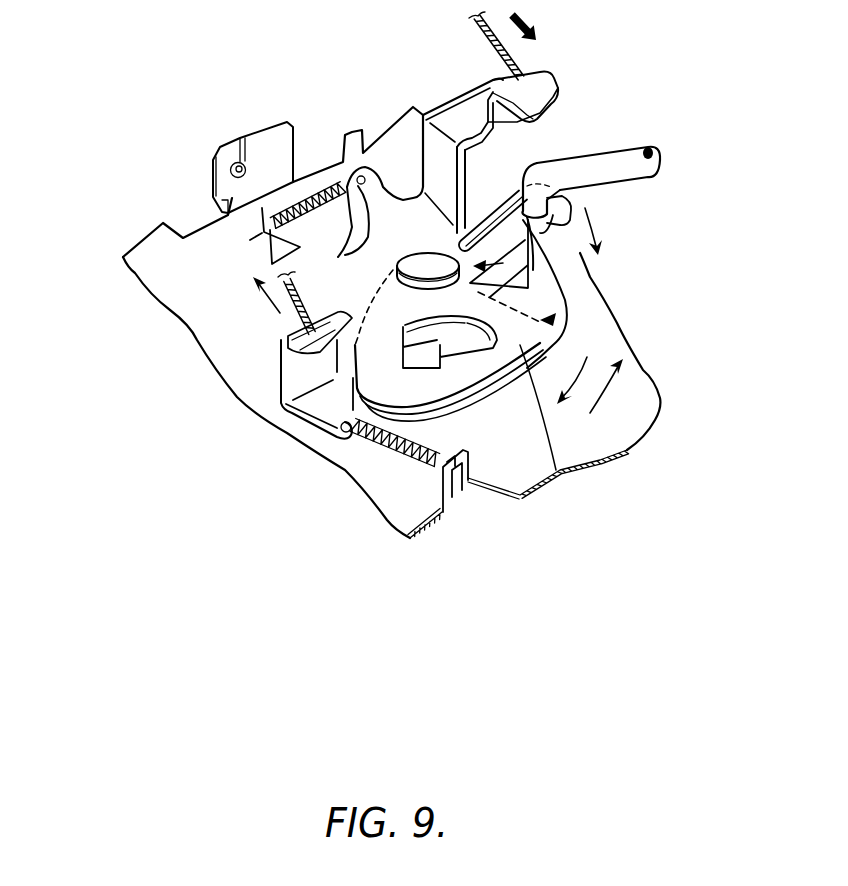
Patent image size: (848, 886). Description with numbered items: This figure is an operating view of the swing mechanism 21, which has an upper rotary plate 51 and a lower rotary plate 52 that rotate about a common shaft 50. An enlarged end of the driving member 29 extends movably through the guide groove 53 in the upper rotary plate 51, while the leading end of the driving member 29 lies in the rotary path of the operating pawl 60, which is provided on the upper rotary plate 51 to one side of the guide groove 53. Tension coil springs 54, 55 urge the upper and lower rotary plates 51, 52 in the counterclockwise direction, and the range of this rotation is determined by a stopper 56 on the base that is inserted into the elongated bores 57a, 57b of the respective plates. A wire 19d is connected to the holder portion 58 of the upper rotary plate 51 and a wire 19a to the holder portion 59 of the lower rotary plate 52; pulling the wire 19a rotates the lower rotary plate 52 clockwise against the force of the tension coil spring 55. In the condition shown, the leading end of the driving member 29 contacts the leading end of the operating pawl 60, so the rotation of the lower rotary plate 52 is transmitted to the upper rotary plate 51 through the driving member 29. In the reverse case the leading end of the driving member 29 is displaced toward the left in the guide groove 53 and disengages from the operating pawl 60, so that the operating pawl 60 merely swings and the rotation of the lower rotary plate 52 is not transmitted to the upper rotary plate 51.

The wire 19a is at (283, 330).
The wire 19d is at (478, 36).
The swing mechanism 21 is at (493, 520).
The driving member 29 is at (632, 150).
The shaft 50 is at (427, 258).
The upper rotary plate 51 is at (565, 312).
The lower rotary plate 52 is at (553, 319).
The guide groove 53 is at (555, 253).
The tension coil spring 54 is at (327, 190).
The tension coil spring 55 is at (397, 455).
The stopper 56 is at (423, 365).
The elongated bore 57a is at (548, 412).
The elongated bore 57b is at (483, 352).
The holder portion 58 is at (553, 80).
The holder portion 59 is at (282, 365).
The operating pawl 60 is at (580, 253).